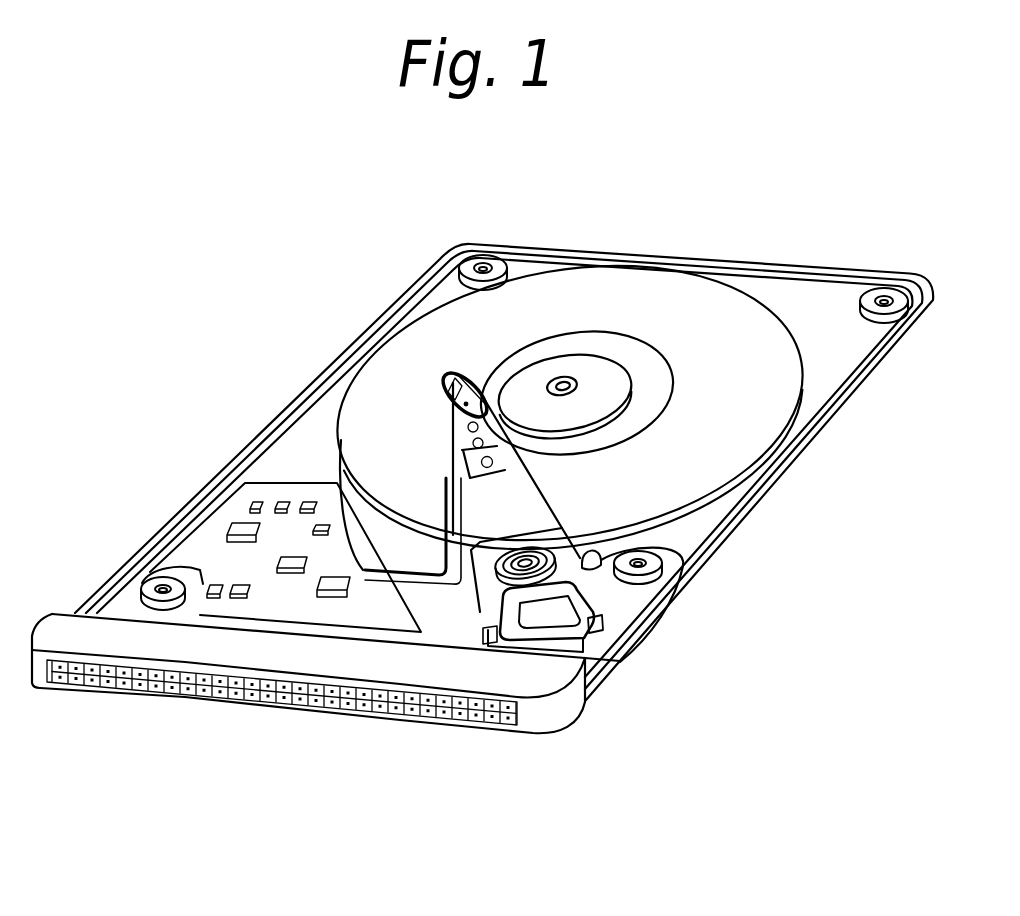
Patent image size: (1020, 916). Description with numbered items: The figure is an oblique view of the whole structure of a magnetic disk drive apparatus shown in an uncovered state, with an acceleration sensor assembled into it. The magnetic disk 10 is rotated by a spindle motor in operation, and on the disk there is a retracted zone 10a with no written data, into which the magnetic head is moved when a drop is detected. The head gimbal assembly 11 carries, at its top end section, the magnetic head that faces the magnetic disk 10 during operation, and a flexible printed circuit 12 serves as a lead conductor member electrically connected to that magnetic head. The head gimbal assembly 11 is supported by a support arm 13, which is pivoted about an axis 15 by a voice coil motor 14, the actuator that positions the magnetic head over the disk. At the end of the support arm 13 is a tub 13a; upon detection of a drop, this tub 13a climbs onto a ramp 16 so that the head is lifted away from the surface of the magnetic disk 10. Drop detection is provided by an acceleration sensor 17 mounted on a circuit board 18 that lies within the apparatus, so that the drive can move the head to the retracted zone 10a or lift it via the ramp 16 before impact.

The magnetic disk 10 is at (690, 293).
The retracted zone 10a is at (595, 340).
The head gimbal assembly (HGA) 11 is at (455, 412).
The flexible printed circuit (FPC) 12 is at (476, 366).
The support arm 13 is at (530, 502).
The tub of the support arm 13a is at (670, 553).
The voice coil motor (VCM) 14 is at (595, 648).
The axis 15 is at (484, 588).
The ramp 16 is at (627, 620).
The acceleration sensor 17 is at (278, 566).
The circuit board 18 is at (305, 610).